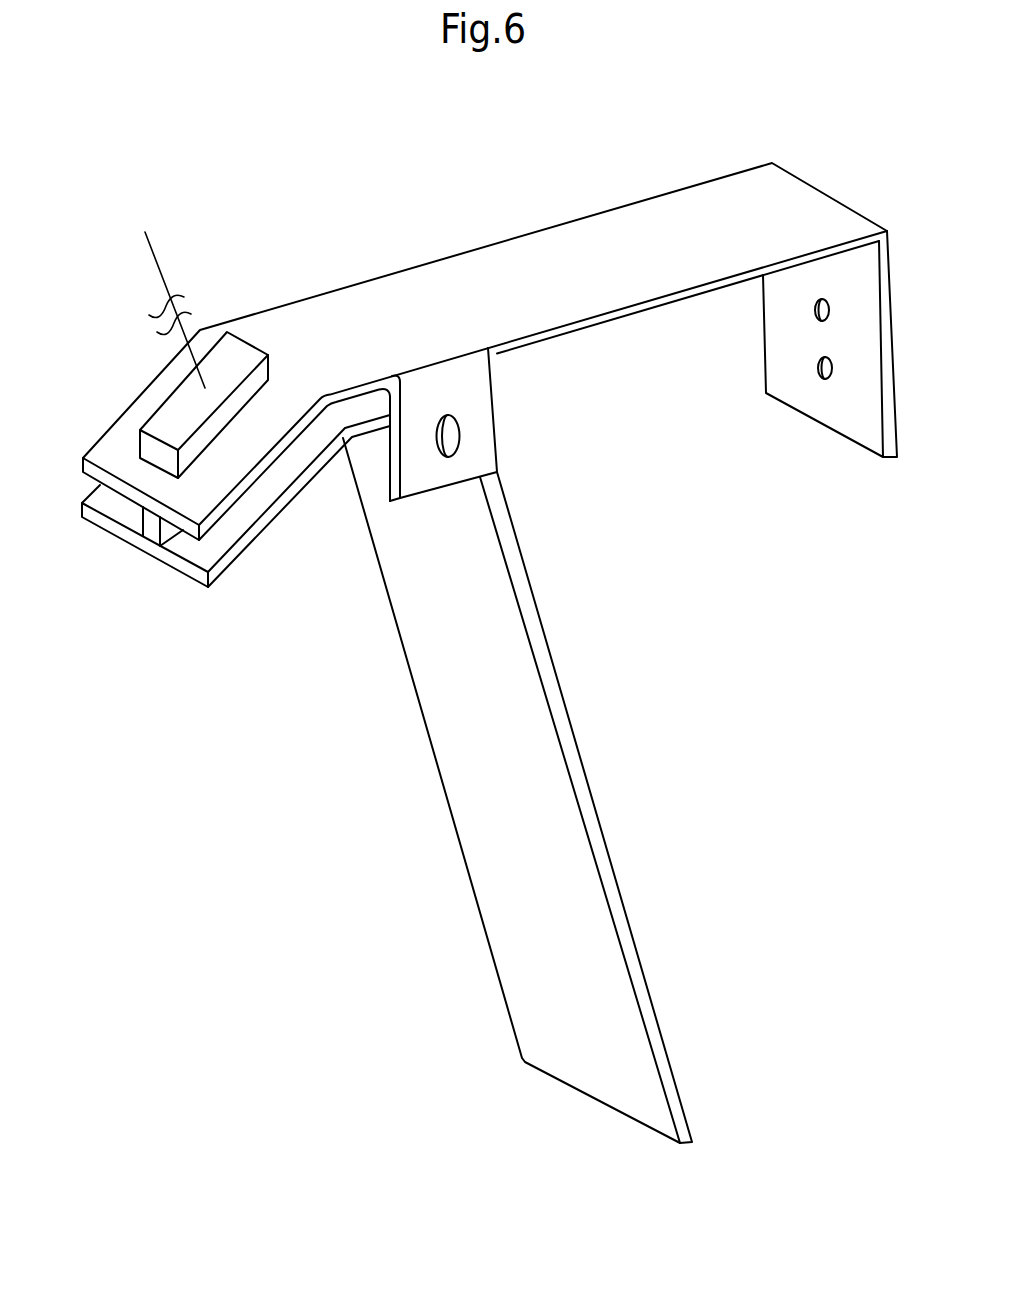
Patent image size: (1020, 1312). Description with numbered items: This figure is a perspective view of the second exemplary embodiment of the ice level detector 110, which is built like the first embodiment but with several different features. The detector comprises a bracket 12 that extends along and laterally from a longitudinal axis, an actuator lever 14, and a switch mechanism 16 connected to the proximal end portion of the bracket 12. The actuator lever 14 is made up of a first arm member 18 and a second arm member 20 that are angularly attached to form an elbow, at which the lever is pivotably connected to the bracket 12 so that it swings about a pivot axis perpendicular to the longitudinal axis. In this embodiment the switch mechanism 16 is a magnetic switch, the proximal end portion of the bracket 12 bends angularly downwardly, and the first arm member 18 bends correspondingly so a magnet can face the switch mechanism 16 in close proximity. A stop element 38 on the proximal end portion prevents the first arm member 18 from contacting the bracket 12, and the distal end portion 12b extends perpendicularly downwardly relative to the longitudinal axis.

The ice level detector 110 is at (530, 201).
The bracket 12 is at (407, 307).
The distal end portion 12b is at (840, 413).
The actuator lever 14 is at (423, 604).
The switch mechanism 16 is at (180, 417).
The first arm member 18 is at (228, 562).
The second arm member 20 is at (468, 849).
The stop element 38 is at (152, 530).